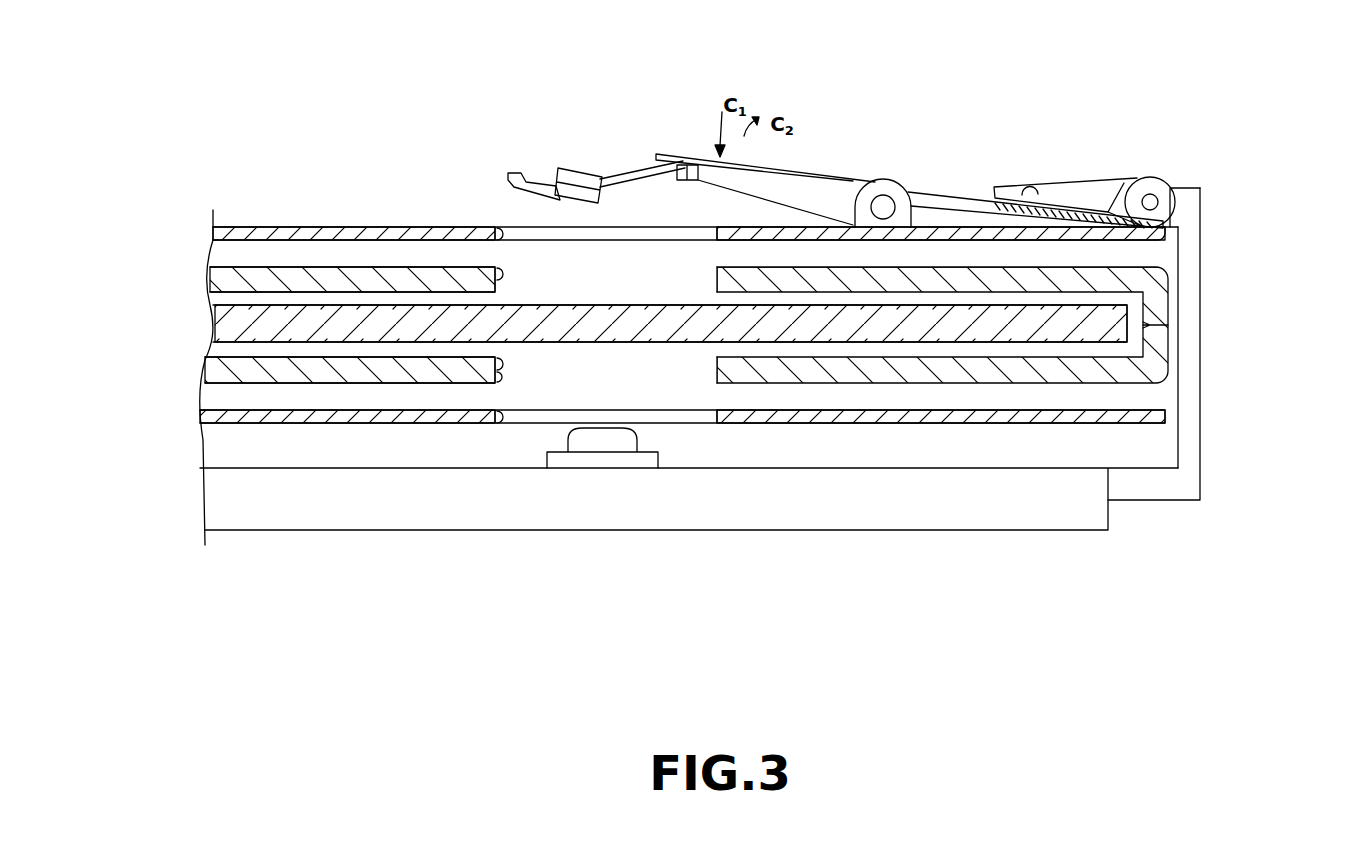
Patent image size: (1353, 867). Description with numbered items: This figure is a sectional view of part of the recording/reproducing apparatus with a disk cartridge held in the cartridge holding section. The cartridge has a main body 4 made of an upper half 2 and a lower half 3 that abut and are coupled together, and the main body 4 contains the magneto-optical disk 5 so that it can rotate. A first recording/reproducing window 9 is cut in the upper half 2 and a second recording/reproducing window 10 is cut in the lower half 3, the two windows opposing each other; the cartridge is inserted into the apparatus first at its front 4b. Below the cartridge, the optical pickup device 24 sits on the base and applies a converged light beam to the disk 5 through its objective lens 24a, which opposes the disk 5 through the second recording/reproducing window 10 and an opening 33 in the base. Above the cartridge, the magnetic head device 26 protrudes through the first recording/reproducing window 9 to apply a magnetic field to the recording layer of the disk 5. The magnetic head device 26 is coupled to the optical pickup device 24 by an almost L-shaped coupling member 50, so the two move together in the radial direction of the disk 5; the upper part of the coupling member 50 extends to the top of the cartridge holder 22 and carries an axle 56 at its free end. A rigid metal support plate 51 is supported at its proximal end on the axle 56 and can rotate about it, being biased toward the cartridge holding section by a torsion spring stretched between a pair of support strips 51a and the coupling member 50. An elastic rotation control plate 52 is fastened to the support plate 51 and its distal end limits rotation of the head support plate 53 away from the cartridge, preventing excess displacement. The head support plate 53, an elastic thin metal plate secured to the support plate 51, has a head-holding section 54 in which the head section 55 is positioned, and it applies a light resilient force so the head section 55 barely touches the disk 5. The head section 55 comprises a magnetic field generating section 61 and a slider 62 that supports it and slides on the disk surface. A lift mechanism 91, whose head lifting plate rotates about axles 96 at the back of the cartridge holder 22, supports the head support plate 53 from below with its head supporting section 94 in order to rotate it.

The upper half 2 is at (1158, 302).
The lower half 3 is at (1158, 357).
The main body 4 is at (771, 327).
The front 4b is at (504, 232).
The magneto-optical disk 5 is at (226, 328).
The first recording/reproducing window 9 is at (495, 236).
The second recording/reproducing window 10 is at (503, 430).
The cartridge holder 22 is at (292, 226).
The optical pickup device 24 is at (826, 512).
The objective lens 24a is at (612, 443).
The magnetic head device 26 is at (1170, 158).
The opening 33 is at (508, 425).
The coupling member 50 is at (1200, 262).
The support plate 51 is at (1082, 190).
The support strips 51a is at (1148, 183).
The rotation control plate 52 is at (948, 198).
The head support plate 53 is at (640, 170).
The head-holding section 54 is at (553, 172).
The head section 55 is at (640, 214).
The axle 56 is at (1153, 202).
The magnetic field generating section 61 is at (590, 187).
The slider 62 is at (506, 174).
The lift mechanism 91 is at (830, 184).
The head supporting section 94 is at (688, 165).
The axles 96 is at (883, 205).